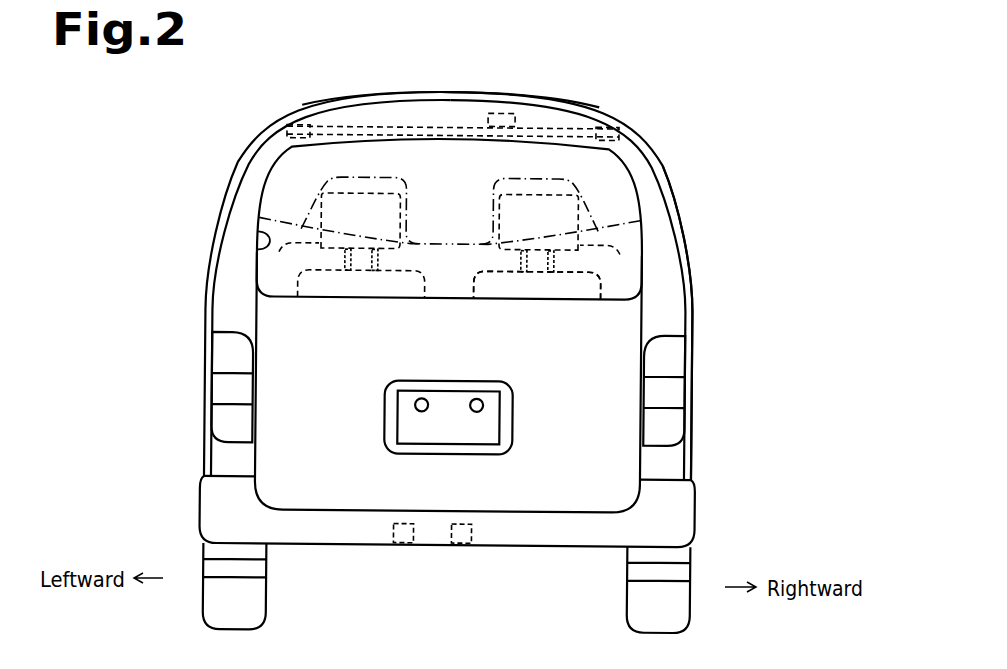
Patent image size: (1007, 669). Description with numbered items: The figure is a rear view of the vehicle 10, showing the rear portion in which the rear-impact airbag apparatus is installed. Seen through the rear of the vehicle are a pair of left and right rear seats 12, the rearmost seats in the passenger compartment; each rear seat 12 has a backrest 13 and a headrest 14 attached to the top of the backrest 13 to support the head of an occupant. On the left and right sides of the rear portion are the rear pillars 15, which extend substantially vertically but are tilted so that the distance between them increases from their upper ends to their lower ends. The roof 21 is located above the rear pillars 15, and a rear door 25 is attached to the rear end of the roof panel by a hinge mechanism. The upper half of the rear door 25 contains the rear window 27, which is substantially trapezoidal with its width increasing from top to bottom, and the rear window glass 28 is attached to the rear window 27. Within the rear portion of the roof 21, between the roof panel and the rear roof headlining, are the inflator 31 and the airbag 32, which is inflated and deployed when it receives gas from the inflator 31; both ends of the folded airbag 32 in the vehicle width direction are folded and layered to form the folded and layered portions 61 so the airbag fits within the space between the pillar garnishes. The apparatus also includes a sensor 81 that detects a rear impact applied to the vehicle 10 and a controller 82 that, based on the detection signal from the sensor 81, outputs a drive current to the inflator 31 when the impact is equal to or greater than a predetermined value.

The vehicle 10 is at (692, 350).
The rear seat 12 is at (481, 298).
The backrest 13 is at (533, 314).
The headrest 14 is at (450, 264).
The rear pillar 15 is at (225, 203).
The roof 21 is at (292, 110).
The rear door 25 is at (673, 285).
The rear window 27 is at (256, 233).
The rear window glass 28 is at (627, 194).
The inflator 31 is at (486, 118).
The airbag 32 is at (442, 137).
The folded and layered portion 61 is at (292, 138).
The sensor 81 is at (461, 543).
The controller 82 is at (403, 543).